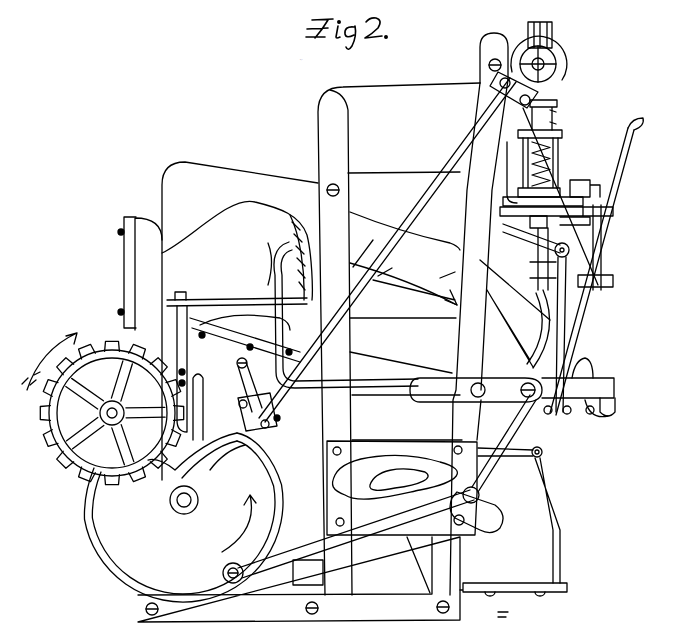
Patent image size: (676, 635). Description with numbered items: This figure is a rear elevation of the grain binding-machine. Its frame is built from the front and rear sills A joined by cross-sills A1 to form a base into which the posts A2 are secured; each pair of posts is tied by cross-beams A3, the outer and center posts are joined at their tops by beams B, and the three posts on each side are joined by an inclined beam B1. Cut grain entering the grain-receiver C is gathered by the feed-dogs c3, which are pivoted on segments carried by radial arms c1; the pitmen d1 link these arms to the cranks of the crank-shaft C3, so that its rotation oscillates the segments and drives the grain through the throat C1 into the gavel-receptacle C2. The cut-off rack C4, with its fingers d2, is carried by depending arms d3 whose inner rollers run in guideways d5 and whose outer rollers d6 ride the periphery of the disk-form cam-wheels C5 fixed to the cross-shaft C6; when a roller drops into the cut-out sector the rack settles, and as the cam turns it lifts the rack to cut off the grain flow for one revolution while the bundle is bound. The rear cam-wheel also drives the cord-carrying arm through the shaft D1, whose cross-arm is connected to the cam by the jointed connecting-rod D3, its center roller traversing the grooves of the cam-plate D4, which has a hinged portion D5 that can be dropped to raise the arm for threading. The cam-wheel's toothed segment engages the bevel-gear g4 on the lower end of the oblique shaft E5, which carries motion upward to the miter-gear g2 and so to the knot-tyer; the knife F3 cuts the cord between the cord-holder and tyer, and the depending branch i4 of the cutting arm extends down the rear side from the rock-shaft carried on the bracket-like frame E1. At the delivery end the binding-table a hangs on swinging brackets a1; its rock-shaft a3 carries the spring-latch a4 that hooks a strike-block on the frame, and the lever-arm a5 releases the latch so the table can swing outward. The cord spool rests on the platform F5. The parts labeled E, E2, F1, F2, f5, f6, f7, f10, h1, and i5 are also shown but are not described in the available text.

The front and rear sills A is at (352, 579).
The cross-sills A1 is at (417, 314).
The posts A2 is at (226, 321).
The cross-beams A3 is at (126, 272).
The beams B is at (399, 339).
The inclined beam B1 is at (406, 379).
The grain-receiver portion C is at (237, 250).
The throat C1 is at (403, 273).
The gavel-receptacle C2 is at (515, 314).
The crank-shaft C3 is at (103, 409).
The cut-off rack C4 is at (312, 289).
The cam-wheel C5 is at (183, 517).
The cross-shaft C6 is at (192, 499).
The shaft D1 is at (476, 390).
The jointed connecting-rod D3 is at (391, 515).
The cam-plate D4 is at (402, 488).
The hinged portion D5 is at (493, 464).
The upper bracket E is at (539, 41).
The bracket-like frame E1 is at (605, 247).
The bracket E'' E2 is at (549, 196).
The oblique shaft E5 is at (405, 227).
The block F' F1 is at (584, 181).
The bar F'' F2 is at (603, 284).
The knife F3 is at (544, 109).
The platform F5 is at (510, 609).
The binding-table a is at (586, 387).
The swinging brackets a1 is at (398, 247).
The rock-shaft a3 is at (569, 418).
The spring-latch a4 is at (614, 412).
The lever-arm a5 is at (596, 266).
The radial arms c1 is at (346, 342).
The feed-dogs c3 is at (326, 258).
The pitmen d1 is at (246, 394).
The fingers d2 is at (237, 307).
The depending arm d3 is at (189, 369).
The guideways d5 is at (204, 406).
The outer rollers d6 is at (245, 340).
The pin f5 is at (557, 110).
The pin f6 is at (557, 122).
The spring f7 is at (543, 169).
The guide f10 is at (542, 172).
The miter-gear wheel g2 is at (547, 61).
The bevel-gear wheel g4 is at (227, 457).
The block h' h1 is at (535, 253).
The depending branch i4 is at (558, 323).
The arm i5 is at (575, 219).